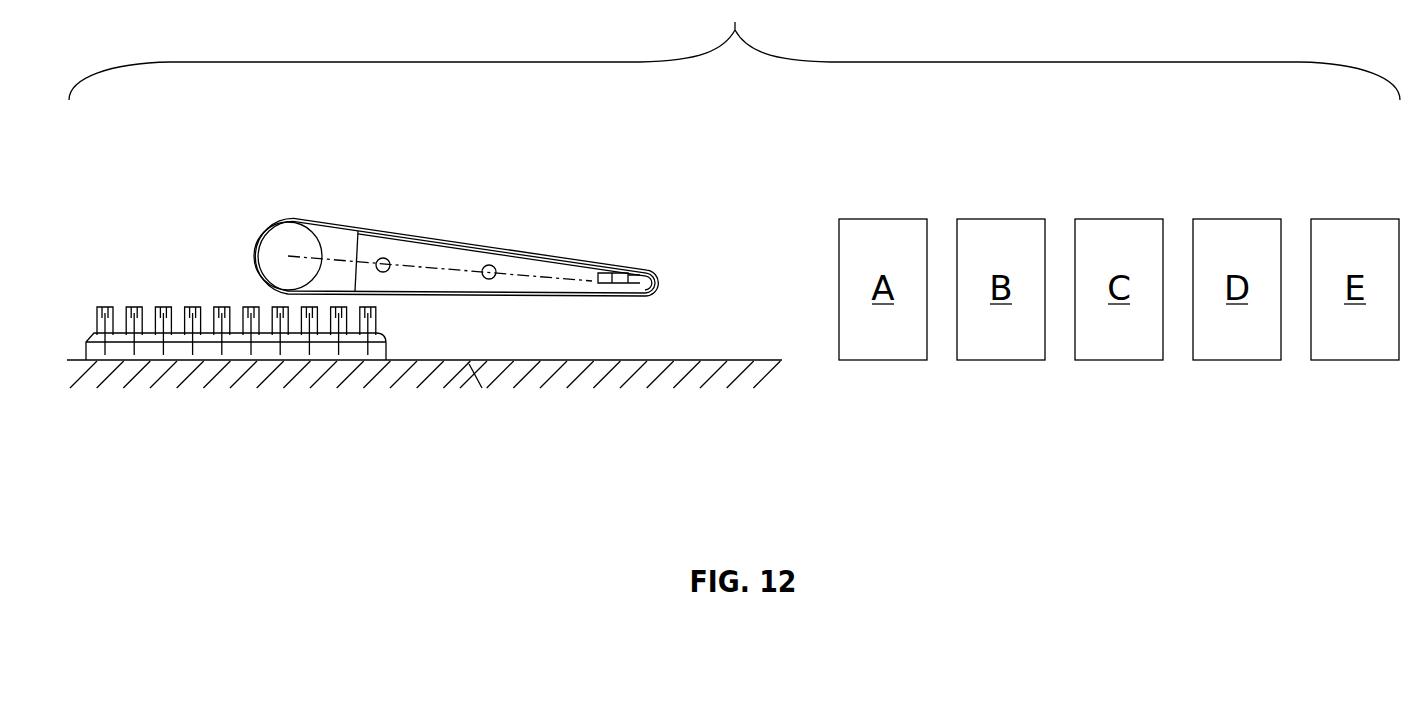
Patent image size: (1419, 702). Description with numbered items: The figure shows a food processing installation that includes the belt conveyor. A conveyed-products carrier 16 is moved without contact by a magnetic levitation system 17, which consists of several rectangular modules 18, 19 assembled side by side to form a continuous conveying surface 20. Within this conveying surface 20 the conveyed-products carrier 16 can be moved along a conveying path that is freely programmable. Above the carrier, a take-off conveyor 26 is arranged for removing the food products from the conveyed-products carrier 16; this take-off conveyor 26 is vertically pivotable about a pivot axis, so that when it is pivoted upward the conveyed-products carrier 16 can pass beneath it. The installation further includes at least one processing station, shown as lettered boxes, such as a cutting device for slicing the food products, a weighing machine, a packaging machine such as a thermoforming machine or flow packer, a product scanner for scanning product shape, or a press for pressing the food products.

The conveyed-products carrier 16 is at (148, 298).
The magnetic levitation system 17 is at (469, 384).
The rectangular module 18 is at (323, 367).
The rectangular module 19 is at (608, 375).
The conveying surface 20 is at (651, 360).
The take-off conveyor 26 is at (430, 230).